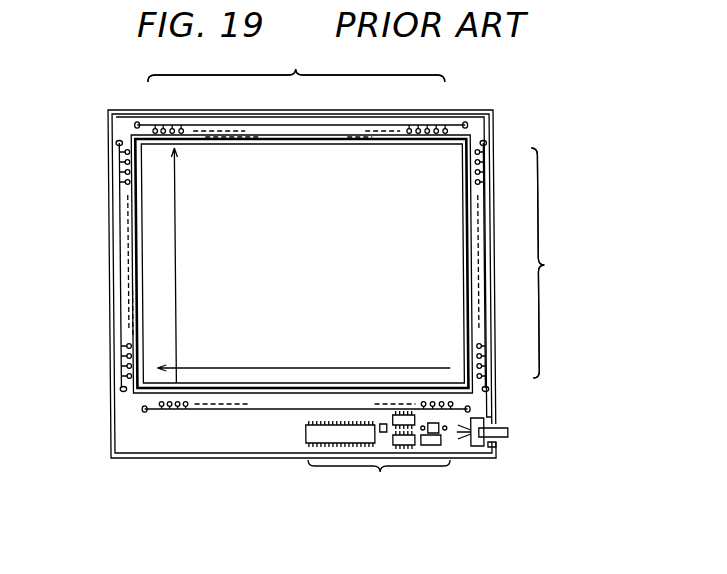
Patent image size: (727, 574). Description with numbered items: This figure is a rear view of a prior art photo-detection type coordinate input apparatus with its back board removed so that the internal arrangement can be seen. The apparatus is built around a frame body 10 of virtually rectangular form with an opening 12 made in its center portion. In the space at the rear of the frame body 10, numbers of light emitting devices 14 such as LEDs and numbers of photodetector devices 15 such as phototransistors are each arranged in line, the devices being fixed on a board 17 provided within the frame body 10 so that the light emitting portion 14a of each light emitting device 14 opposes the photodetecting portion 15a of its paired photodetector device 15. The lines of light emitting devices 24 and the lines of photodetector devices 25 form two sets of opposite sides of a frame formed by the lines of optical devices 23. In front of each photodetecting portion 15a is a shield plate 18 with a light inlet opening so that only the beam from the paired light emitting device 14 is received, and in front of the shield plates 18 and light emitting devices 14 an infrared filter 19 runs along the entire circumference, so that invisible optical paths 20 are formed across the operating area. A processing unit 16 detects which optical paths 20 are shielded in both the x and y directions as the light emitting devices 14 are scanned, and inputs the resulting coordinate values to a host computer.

The frame body 10 is at (160, 251).
The opening 12 is at (455, 200).
The light emitting devices 14 is at (474, 347).
The light emitting portion 14a is at (486, 380).
The photodetector devices 15 is at (178, 136).
The photodetecting portion 15a is at (130, 190).
The processing unit 16 is at (407, 455).
The board 17 is at (223, 126).
The shield plate 18 is at (122, 140).
The infrared filter 19 is at (298, 142).
The optical paths 20 is at (258, 370).
The lines of optical devices 23 is at (347, 223).
The lines of light emitting devices 24 is at (571, 263).
The lines of photodetector devices 25 is at (295, 61).